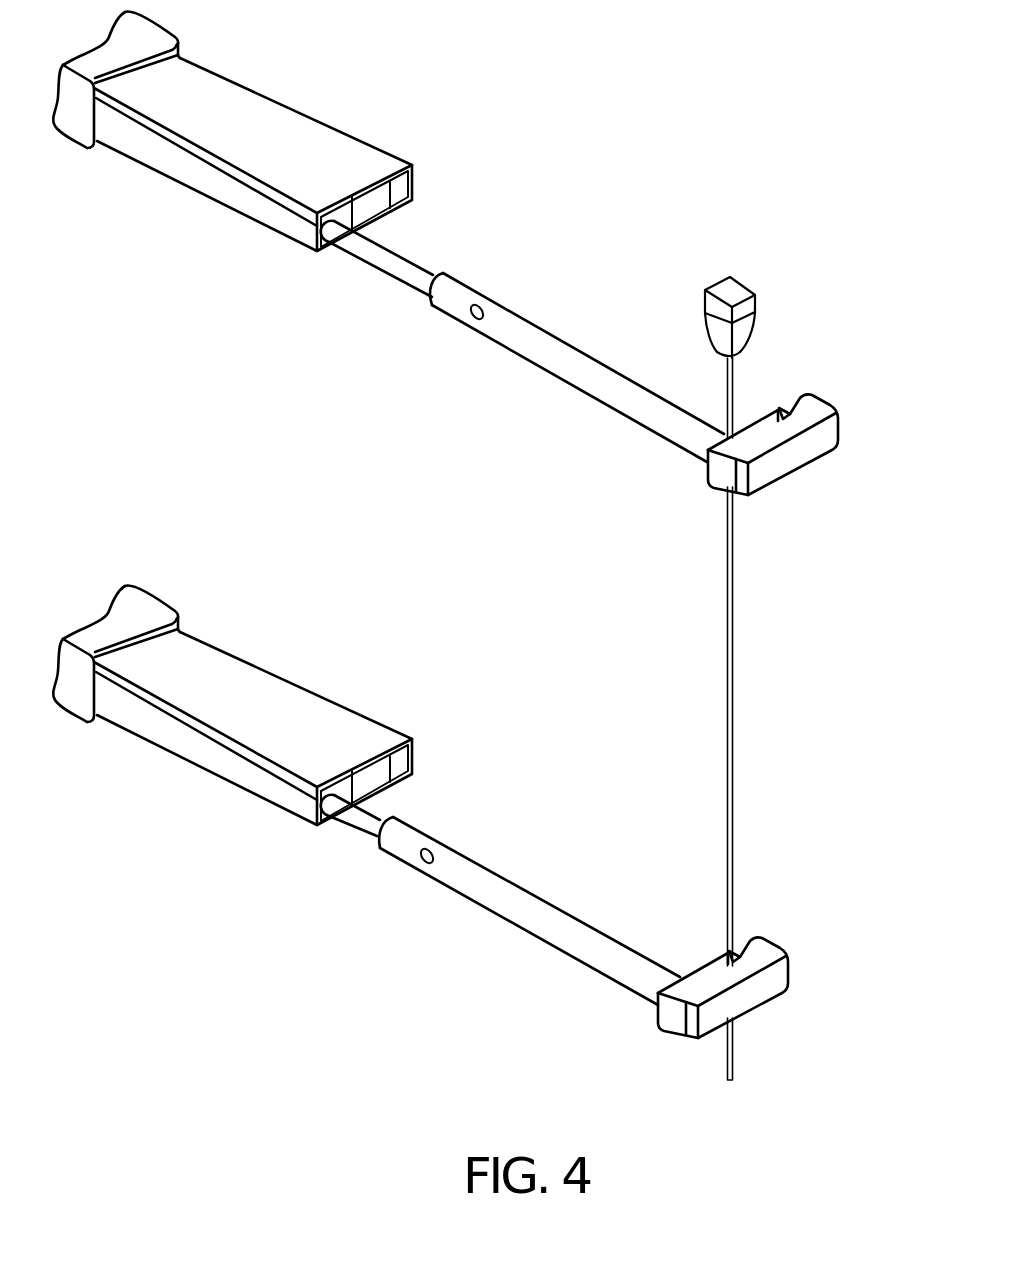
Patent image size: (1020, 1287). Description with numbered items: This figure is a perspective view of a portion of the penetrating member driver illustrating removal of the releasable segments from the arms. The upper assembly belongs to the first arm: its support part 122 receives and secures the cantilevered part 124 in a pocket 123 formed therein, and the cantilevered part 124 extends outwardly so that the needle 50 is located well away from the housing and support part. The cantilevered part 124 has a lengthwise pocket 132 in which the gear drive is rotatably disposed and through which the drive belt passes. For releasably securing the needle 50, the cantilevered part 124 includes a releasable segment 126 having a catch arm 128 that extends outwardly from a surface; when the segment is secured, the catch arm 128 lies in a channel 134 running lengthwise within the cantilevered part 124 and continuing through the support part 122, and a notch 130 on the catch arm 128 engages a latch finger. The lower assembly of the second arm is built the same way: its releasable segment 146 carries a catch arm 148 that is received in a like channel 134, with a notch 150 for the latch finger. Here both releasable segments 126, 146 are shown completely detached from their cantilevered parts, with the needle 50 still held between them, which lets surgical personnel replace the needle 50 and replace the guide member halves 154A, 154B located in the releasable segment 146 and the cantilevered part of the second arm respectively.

The needle 50 is at (733, 663).
The support part 122 is at (372, 713).
The pocket 123 is at (140, 32).
The cantilevered part 124 is at (297, 105).
The releasable segment 126 is at (837, 410).
The catch arm 128 is at (518, 358).
The notch 130 is at (465, 322).
The pocket 132 is at (377, 200).
The channel 134 is at (332, 245).
The releasable segment 146 is at (782, 948).
The catch arm 148 is at (540, 900).
The notch 150 is at (422, 870).
The guide member half 154A is at (684, 960).
The guide member half 154B is at (380, 787).